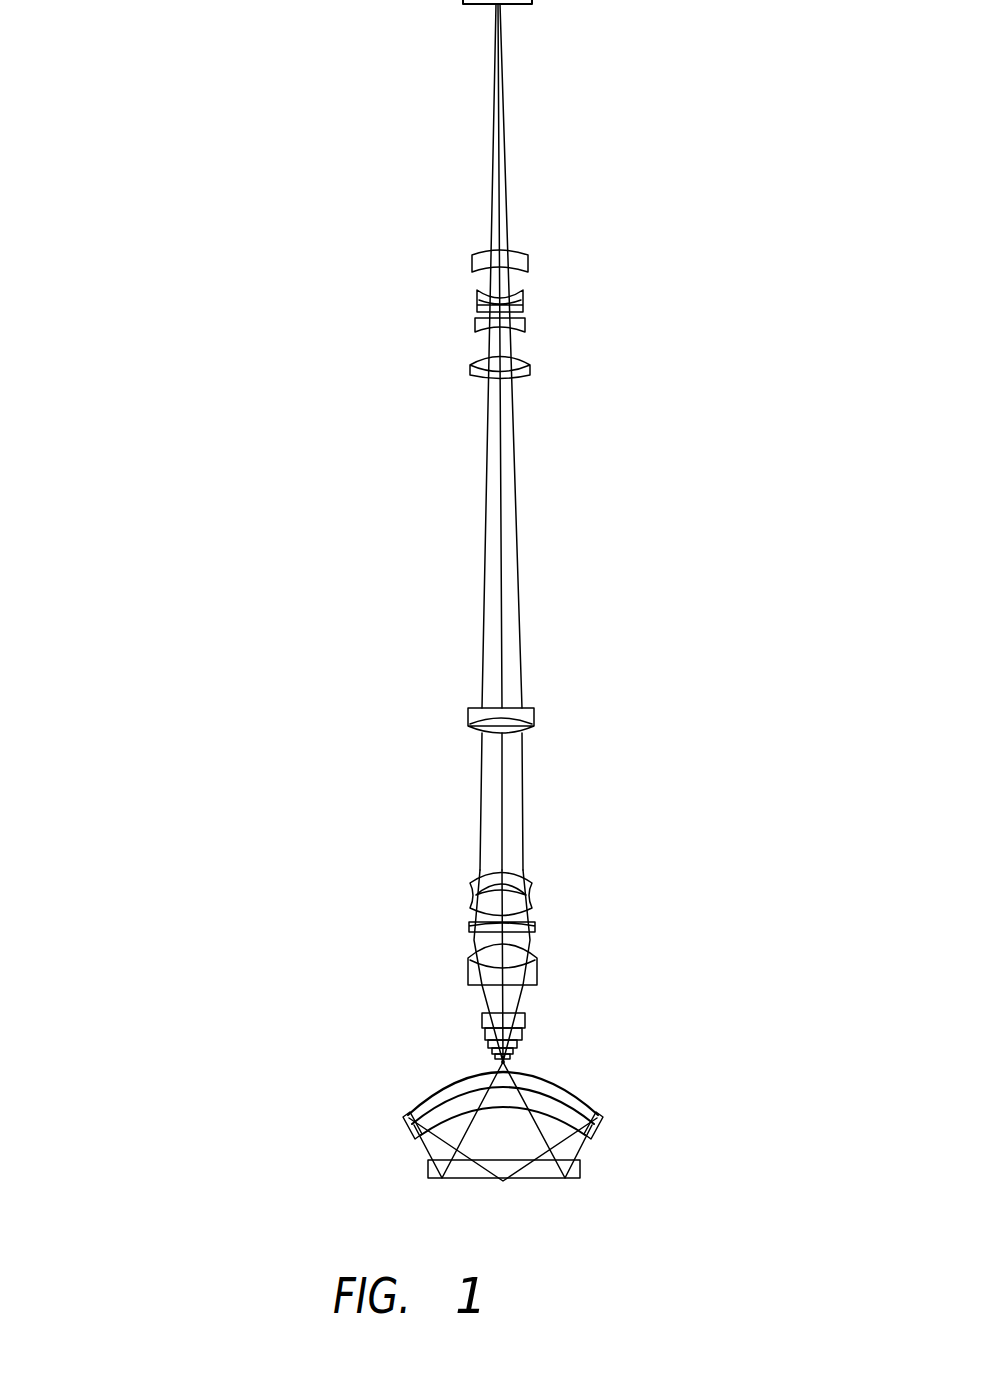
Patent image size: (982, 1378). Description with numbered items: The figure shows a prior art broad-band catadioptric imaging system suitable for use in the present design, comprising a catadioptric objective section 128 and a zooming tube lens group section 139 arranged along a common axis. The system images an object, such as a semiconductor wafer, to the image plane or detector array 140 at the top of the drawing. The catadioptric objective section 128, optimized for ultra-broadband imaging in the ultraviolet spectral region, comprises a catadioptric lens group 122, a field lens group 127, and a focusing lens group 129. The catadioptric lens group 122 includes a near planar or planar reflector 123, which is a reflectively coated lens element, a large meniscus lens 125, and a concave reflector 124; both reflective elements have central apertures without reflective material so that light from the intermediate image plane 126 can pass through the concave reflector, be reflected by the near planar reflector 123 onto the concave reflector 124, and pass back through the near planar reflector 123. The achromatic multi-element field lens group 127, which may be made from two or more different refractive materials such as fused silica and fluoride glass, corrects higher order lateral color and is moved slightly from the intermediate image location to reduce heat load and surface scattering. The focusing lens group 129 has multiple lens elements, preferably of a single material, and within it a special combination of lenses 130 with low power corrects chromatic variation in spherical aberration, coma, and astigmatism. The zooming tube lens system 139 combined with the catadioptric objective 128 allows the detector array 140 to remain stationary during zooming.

The image plane or detector array 140 is at (536, 5).
The zooming tube lens group section 139 is at (378, 383).
The low power lens combination 130 is at (377, 750).
The focusing lens group 129 is at (378, 995).
The catadioptric objective section 128 is at (171, 706).
The field lens group 127 is at (378, 1058).
The catadioptric lens group 122 is at (494, 1123).
The intermediate image plane 126 is at (506, 1061).
The concave reflector 124 is at (601, 1114).
The meniscus lens 125 is at (594, 1131).
The near planar or planar reflector 123 is at (582, 1172).